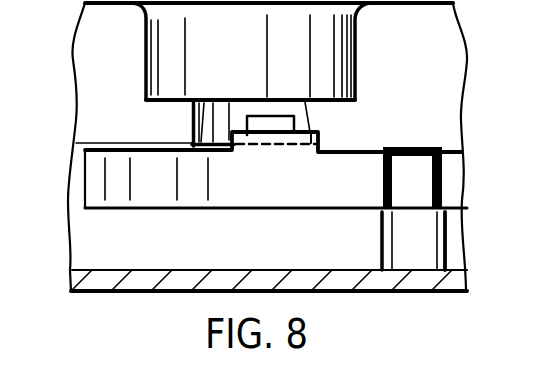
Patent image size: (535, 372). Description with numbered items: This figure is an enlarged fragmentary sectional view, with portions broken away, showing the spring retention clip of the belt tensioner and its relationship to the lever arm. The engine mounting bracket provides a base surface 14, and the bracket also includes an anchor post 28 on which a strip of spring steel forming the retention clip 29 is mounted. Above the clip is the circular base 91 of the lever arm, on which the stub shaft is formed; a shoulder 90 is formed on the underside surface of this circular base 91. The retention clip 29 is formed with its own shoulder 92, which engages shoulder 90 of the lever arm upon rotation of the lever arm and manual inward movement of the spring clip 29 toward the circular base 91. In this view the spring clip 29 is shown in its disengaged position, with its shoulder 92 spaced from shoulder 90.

The base surface 14 is at (88, 271).
The anchor post 28 is at (422, 242).
The retention clip 29 is at (115, 187).
The shoulder 90 is at (250, 117).
The circular base 91 is at (200, 121).
The shoulder 92 is at (220, 146).